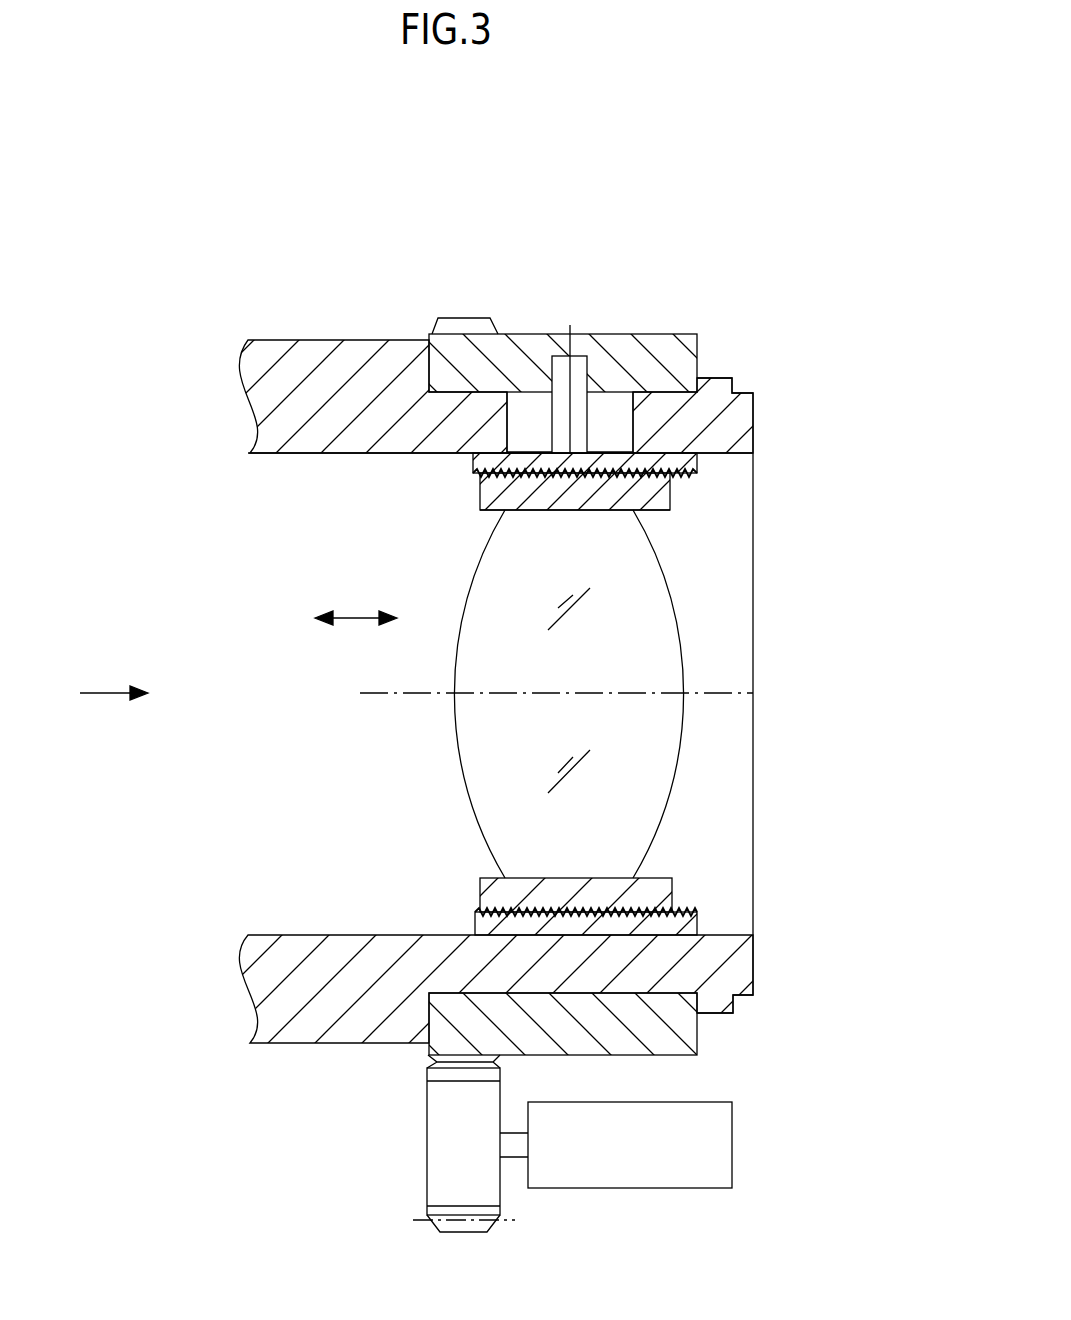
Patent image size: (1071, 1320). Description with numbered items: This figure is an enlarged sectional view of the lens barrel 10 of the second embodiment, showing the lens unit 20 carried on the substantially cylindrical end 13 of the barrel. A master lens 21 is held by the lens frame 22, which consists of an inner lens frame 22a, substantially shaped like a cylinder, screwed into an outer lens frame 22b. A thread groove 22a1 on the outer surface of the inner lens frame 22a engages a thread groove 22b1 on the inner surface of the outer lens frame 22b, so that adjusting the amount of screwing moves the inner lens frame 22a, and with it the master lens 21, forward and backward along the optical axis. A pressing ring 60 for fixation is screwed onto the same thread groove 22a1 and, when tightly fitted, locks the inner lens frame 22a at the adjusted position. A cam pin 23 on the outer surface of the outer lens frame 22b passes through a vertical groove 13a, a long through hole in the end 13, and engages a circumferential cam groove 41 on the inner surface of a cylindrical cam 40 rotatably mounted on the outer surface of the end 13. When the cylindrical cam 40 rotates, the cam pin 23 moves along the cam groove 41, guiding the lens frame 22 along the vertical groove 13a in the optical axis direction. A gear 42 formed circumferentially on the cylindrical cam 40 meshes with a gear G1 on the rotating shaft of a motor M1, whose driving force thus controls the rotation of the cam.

The lens barrel 10 is at (69, 218).
The lens unit 20 is at (558, 222).
The end of the lens barrel 13 is at (335, 453).
The vertical groove 13a is at (527, 408).
The master lens 21 is at (670, 617).
The lens frame 22 is at (850, 450).
The inner lens frame 22a is at (672, 502).
The thread groove 22a1 is at (606, 510).
The outer lens frame 22b is at (690, 466).
The thread groove 22b1 is at (570, 473).
The cam pin 23 is at (580, 367).
The cylindrical cam 40 is at (697, 350).
The cam groove 41 is at (563, 405).
The gear 42 is at (447, 318).
The pressing ring 60 is at (683, 447).
The gear G1 is at (427, 1177).
The motor M1 is at (733, 1150).